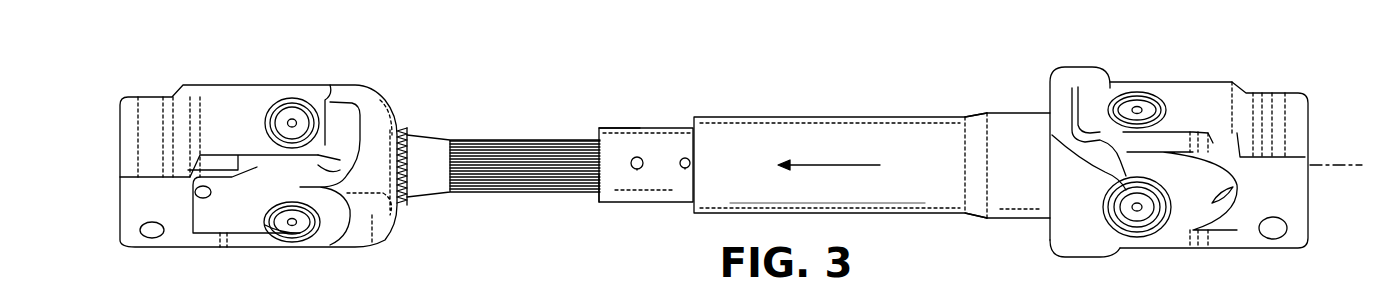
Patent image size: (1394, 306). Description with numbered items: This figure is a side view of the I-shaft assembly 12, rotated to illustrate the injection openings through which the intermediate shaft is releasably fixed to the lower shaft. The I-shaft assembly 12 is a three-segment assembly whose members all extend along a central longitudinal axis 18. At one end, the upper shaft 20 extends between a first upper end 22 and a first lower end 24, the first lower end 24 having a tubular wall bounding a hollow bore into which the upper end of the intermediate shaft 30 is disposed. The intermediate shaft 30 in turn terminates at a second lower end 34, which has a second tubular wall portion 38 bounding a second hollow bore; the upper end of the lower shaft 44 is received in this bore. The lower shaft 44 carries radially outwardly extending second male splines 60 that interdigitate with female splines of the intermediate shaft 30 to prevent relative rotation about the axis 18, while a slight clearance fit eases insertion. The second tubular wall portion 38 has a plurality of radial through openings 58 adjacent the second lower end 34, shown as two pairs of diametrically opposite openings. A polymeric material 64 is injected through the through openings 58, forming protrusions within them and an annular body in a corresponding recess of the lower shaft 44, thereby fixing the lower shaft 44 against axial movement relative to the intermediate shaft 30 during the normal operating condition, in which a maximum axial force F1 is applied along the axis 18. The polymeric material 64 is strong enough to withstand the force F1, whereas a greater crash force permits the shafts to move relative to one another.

The I-shaft assembly 12 is at (1179, 130).
The axis 18 is at (1348, 163).
The upper shaft 20 is at (922, 116).
The first upper end 22 is at (1088, 103).
The first lower end 24 is at (694, 118).
The intermediate shaft 30 is at (650, 127).
The second lower end 34 is at (598, 198).
The second tubular wall portion 38 is at (618, 126).
The lower shaft 44 is at (481, 138).
The through openings 58 is at (635, 170).
The second male splines 60 is at (534, 138).
The polymeric material 64 is at (682, 168).
The maximum axial force F1 is at (832, 163).